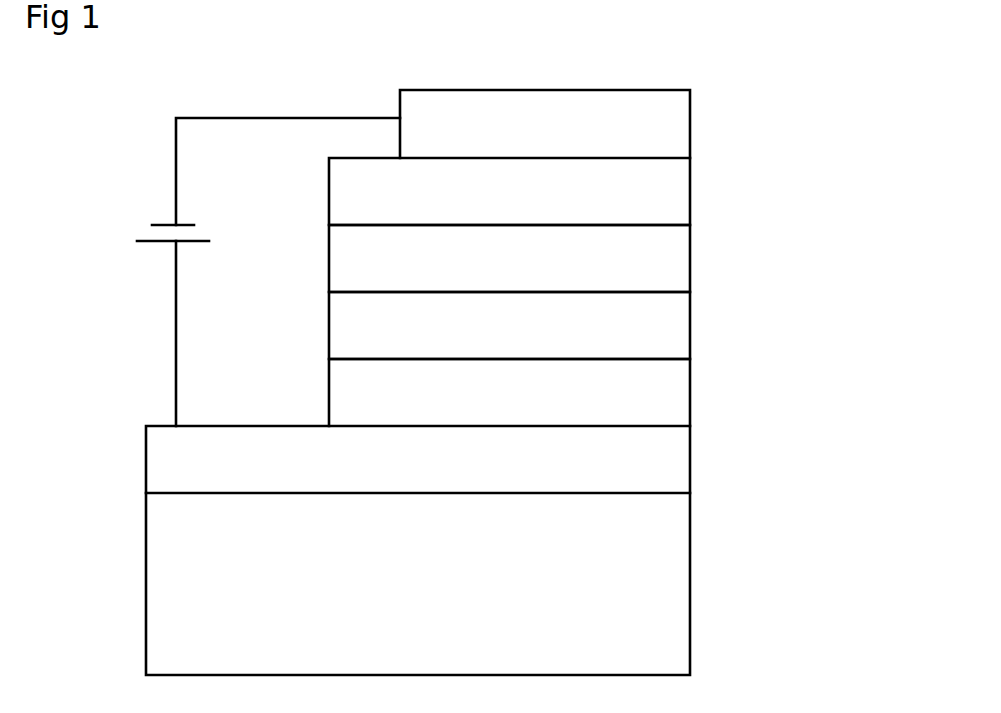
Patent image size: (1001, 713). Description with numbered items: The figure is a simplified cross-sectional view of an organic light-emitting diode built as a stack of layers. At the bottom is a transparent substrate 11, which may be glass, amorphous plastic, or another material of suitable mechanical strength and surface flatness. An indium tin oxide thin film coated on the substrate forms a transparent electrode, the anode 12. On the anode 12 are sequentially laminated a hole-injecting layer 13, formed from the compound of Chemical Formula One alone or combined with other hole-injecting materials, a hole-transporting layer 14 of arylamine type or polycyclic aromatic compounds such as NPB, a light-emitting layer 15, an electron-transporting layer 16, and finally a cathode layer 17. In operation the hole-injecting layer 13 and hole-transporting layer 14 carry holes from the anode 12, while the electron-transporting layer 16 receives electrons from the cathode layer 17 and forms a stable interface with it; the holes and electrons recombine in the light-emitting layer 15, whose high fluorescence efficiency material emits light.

The transparent substrate 11 is at (672, 600).
The anode 12 is at (667, 468).
The hole-injecting layer 13 is at (665, 405).
The hole-transporting layer 14 is at (658, 338).
The light-emitting layer 15 is at (659, 272).
The electron-transporting layer 16 is at (657, 205).
The cathode layer 17 is at (662, 132).